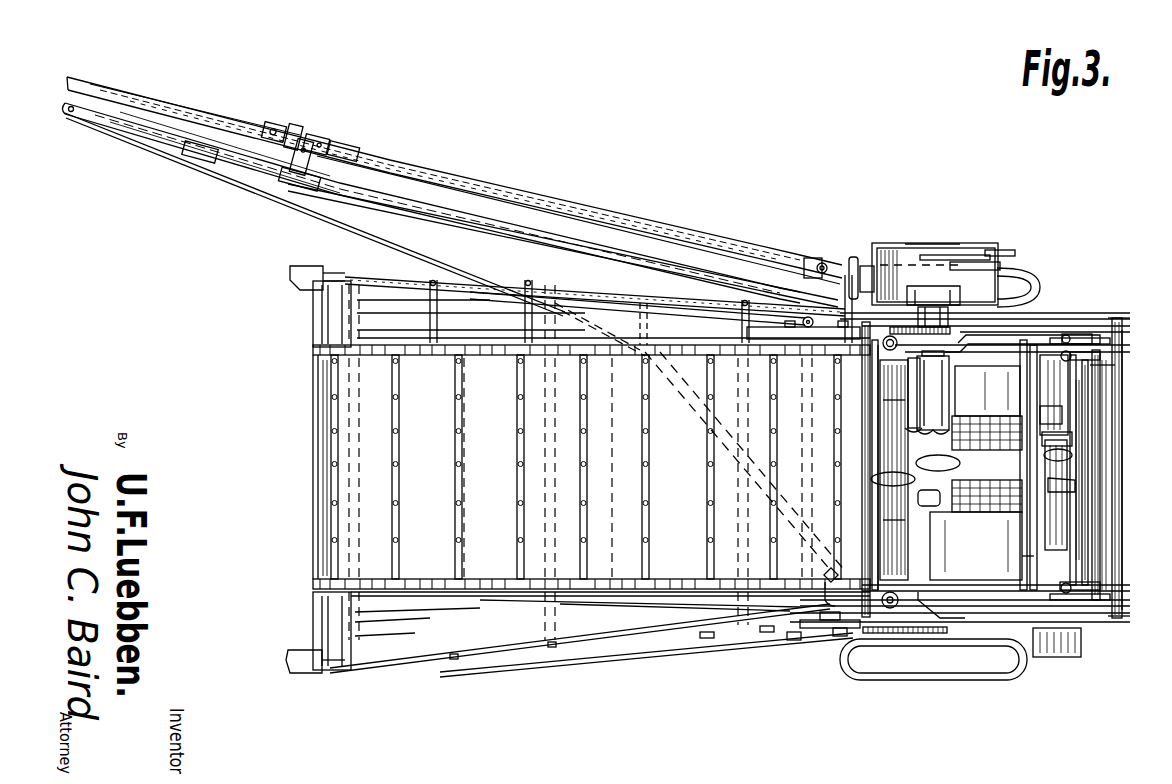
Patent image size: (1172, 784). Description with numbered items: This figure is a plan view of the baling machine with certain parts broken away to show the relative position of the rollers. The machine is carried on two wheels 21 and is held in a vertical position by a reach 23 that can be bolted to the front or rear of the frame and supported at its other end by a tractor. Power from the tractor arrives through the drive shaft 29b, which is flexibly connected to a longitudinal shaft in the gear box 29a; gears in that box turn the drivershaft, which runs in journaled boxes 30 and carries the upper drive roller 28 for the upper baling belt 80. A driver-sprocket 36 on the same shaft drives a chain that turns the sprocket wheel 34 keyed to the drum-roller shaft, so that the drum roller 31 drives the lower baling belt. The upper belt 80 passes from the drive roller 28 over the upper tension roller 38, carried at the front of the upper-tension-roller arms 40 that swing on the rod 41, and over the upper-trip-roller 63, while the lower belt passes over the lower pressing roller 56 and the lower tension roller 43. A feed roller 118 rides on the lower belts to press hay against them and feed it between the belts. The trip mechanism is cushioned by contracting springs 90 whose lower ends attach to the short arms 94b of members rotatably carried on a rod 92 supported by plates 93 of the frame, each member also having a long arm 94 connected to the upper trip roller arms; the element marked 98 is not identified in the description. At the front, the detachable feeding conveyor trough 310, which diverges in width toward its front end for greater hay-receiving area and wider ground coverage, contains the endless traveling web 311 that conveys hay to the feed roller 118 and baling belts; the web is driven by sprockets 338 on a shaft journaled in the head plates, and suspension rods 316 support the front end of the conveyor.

The drive shaft 29b is at (543, 207).
The gear box 29a is at (895, 244).
The reach 23 is at (468, 279).
The suspension rods 316 is at (608, 300).
The sprocket wheel 34 is at (900, 302).
The driver-sprocket 36 is at (933, 302).
The wheels 21 is at (1036, 282).
The upper-tension-roller arms 40 is at (1000, 328).
The plates 93 is at (1120, 335).
The long arm 94 is at (1118, 350).
The bearing 98 is at (1128, 356).
The short arm 94b is at (1130, 362).
The contracting springs 90 is at (1120, 380).
The upper-trip-roller 63 is at (1060, 418).
The lower pressing roller 56 is at (1072, 438).
The lower tension roller 43 is at (1070, 486).
The rod 92 is at (1123, 506).
The upper baling belt 80 is at (976, 473).
The feed roller 118 is at (908, 432).
The upper drive roller 28 is at (933, 392).
The drum roller 31 is at (889, 470).
The upper tension roller 38 is at (928, 506).
The rod 41 is at (1022, 554).
The journaled boxes 30 is at (940, 612).
The endless traveling web 311 is at (320, 458).
The sprockets 338 is at (844, 571).
The feeding conveyor trough 310 is at (421, 658).